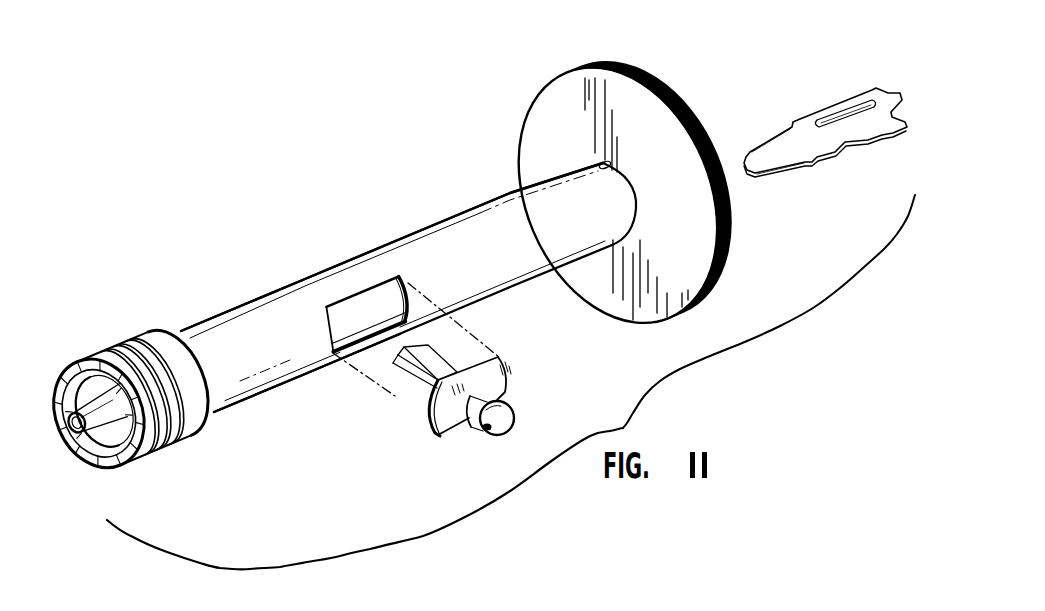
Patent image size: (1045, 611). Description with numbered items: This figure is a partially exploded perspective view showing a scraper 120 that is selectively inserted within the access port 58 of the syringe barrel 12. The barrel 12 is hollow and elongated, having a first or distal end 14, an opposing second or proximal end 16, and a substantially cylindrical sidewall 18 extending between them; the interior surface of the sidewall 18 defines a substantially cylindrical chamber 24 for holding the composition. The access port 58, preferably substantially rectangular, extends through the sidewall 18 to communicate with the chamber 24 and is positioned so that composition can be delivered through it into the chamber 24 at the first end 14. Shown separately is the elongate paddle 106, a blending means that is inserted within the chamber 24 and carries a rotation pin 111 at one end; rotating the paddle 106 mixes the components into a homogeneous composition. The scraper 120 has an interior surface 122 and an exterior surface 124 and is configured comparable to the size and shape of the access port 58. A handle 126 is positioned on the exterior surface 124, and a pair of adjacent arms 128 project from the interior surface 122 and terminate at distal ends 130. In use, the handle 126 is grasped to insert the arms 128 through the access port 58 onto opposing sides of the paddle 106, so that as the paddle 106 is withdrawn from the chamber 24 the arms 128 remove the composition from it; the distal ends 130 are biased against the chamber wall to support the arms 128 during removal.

The barrel 12 is at (247, 300).
The first end 14 is at (170, 328).
The second end 16 is at (572, 163).
The sidewall 18 is at (467, 212).
The chamber 24 is at (343, 312).
The access port 58 is at (372, 304).
The paddle 106 is at (825, 128).
The rotation pin 111 is at (770, 153).
The scraper 120 is at (477, 397).
The interior surface 122 is at (426, 413).
The exterior surface 124 is at (468, 422).
The handle 126 is at (514, 418).
The arms 128 is at (440, 363).
The distal ends 130 is at (368, 382).